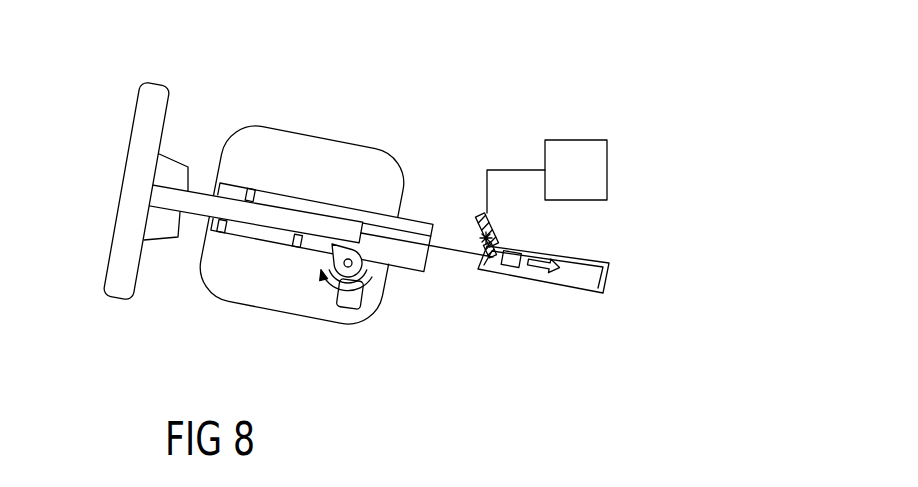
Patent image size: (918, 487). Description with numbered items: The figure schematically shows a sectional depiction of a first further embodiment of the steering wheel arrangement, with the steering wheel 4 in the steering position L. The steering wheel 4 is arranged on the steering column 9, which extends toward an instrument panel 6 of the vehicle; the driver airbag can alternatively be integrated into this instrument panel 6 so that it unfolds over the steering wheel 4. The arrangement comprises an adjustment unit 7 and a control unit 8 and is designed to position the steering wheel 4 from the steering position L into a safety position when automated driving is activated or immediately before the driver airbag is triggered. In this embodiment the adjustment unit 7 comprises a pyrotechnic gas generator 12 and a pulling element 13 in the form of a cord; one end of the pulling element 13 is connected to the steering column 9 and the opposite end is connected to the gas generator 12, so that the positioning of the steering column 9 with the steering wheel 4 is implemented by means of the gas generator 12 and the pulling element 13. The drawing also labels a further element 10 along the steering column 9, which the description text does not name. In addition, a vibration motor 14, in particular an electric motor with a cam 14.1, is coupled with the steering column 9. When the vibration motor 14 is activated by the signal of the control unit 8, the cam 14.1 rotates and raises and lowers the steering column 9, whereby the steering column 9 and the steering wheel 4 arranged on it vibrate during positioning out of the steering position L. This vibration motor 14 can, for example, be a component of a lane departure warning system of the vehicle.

The steering wheel 4 is at (122, 250).
The instrument panel 6 is at (351, 160).
The adjustment unit 7 is at (464, 162).
The control unit 8 is at (588, 187).
The steering column 9 is at (293, 223).
The push rod 10 is at (405, 272).
The pyrotechnic gas generator 12 is at (594, 300).
The pulling element 13 is at (460, 248).
The vibration motor 14 is at (349, 303).
The cam 14.1 is at (328, 282).
The steering position L is at (209, 104).